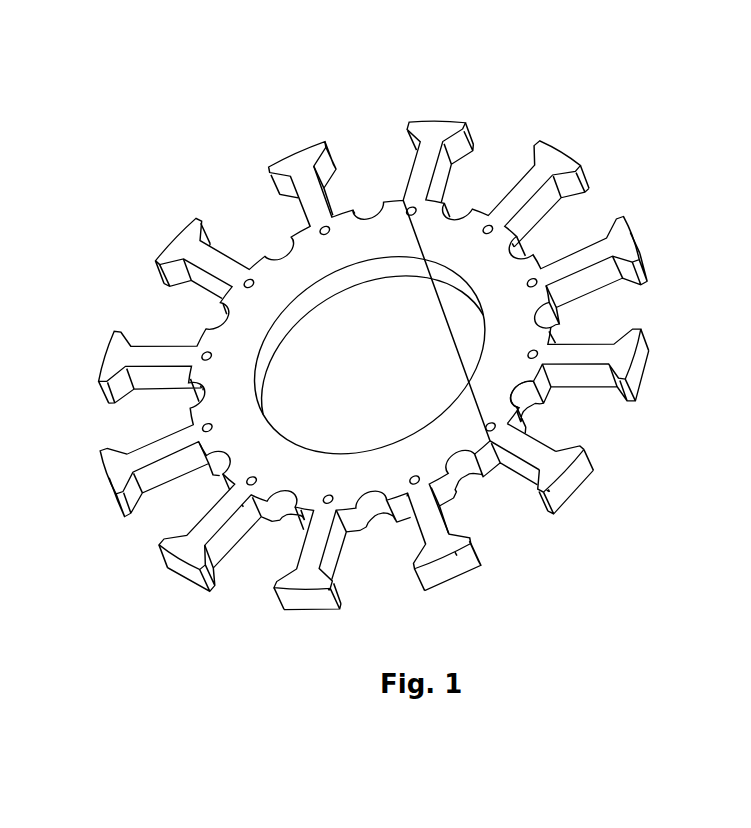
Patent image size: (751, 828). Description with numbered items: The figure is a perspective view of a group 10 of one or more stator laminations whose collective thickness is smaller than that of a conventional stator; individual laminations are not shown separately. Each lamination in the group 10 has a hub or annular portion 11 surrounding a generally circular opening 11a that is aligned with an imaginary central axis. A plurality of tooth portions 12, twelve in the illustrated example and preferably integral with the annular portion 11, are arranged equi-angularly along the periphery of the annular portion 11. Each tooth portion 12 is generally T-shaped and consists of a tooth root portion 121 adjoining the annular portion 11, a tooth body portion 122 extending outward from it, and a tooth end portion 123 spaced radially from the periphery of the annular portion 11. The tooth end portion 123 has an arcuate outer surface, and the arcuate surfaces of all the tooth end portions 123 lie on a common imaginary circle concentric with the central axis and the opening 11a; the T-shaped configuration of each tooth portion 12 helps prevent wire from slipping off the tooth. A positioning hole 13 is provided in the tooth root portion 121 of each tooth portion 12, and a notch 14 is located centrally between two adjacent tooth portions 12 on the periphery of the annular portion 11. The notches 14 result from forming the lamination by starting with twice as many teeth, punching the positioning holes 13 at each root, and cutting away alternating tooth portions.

The group of laminations 10 is at (374, 367).
The annular portion 11 is at (470, 405).
The opening 11a is at (318, 428).
The tooth portion 12 is at (581, 495).
The tooth root portion 121 is at (523, 446).
The tooth body portion 122 is at (559, 466).
The tooth end portion 123 is at (592, 488).
The positioning hole 13 is at (493, 227).
The notch 14 is at (527, 392).